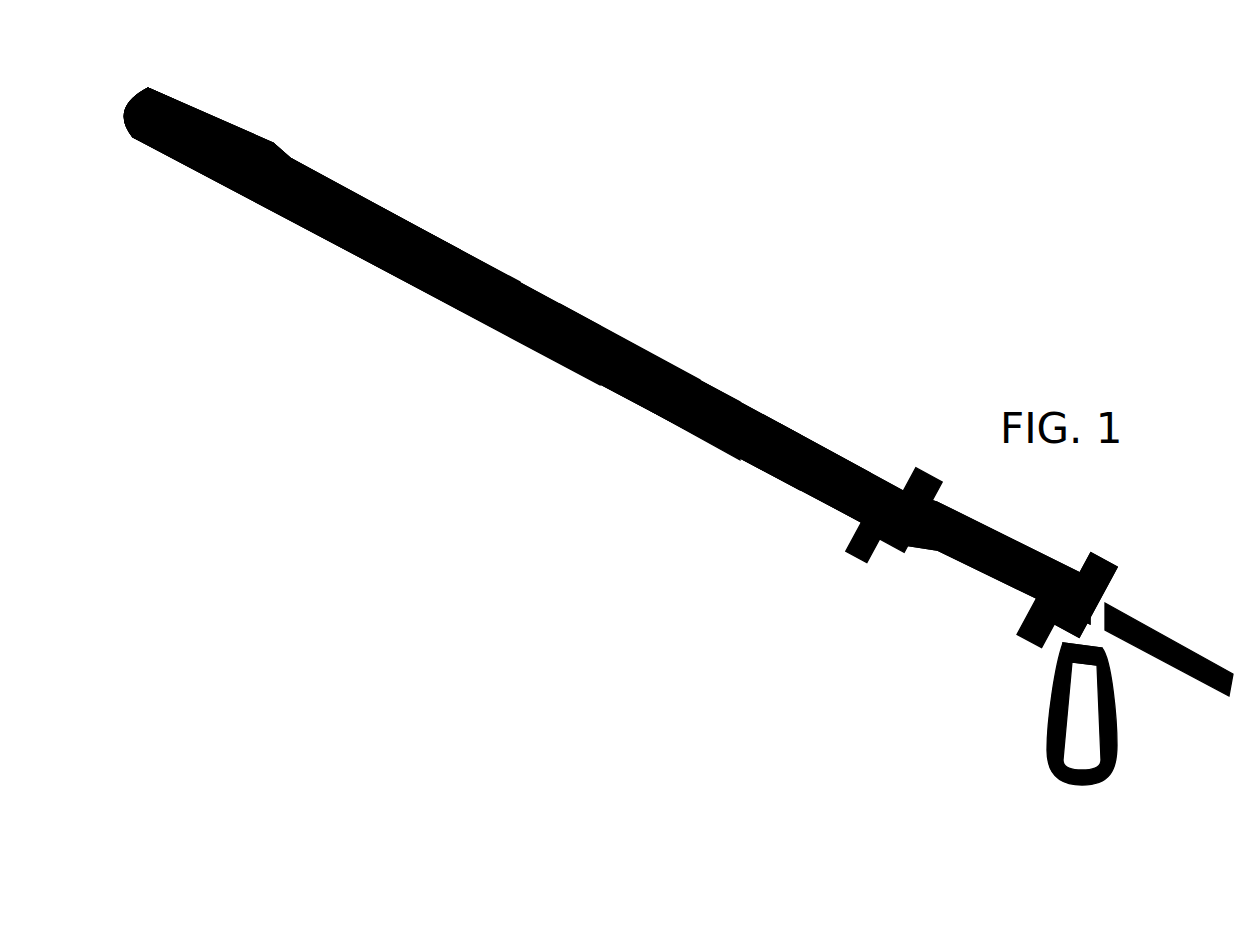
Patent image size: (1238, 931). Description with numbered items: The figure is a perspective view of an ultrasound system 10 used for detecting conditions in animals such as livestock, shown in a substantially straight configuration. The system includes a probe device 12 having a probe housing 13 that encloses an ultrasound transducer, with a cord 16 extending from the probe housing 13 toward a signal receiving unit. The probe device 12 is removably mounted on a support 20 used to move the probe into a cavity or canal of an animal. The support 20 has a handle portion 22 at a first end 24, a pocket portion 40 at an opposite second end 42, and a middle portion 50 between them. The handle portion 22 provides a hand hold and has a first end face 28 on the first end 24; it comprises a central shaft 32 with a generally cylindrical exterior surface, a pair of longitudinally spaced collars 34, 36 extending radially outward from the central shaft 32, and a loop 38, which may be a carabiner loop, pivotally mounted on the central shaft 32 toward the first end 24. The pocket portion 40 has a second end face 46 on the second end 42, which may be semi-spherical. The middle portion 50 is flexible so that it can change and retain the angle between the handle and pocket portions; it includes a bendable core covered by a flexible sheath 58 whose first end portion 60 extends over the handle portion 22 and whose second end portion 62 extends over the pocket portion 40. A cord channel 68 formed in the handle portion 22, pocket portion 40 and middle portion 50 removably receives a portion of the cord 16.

The ultrasound system 10 is at (863, 297).
The probe device 12 is at (220, 110).
The probe housing 13 is at (272, 143).
The cord 16 is at (1133, 627).
The support 20 is at (722, 302).
The handle portion 22 is at (810, 430).
The first end 24 is at (1113, 602).
The first end face 28 is at (1103, 643).
The central shaft 32 is at (857, 463).
The collar 34 is at (1077, 567).
The collar 36 is at (935, 492).
The loop 38 is at (1050, 727).
The pocket portion 40 is at (367, 180).
The second end 42 is at (125, 120).
The second end face 46 is at (137, 88).
The middle portion 50 is at (590, 303).
The flexible sheath 58 is at (465, 255).
The first end portion of the sheath 60 is at (687, 373).
The second end portion of the sheath 62 is at (412, 227).
The cord channel 68 is at (750, 410).